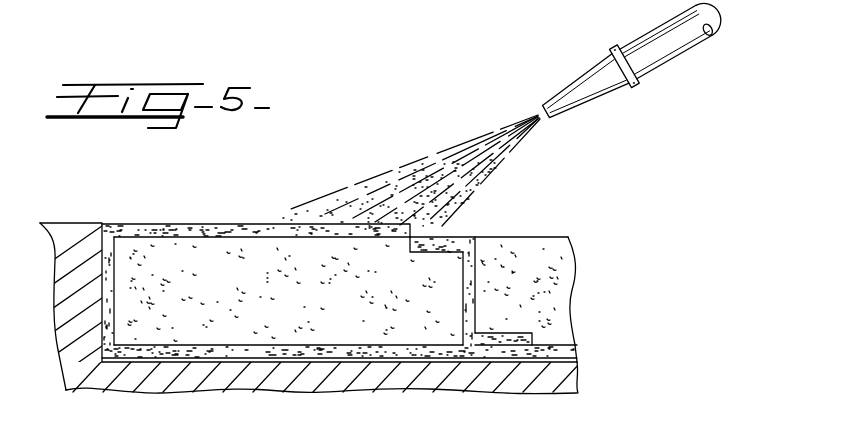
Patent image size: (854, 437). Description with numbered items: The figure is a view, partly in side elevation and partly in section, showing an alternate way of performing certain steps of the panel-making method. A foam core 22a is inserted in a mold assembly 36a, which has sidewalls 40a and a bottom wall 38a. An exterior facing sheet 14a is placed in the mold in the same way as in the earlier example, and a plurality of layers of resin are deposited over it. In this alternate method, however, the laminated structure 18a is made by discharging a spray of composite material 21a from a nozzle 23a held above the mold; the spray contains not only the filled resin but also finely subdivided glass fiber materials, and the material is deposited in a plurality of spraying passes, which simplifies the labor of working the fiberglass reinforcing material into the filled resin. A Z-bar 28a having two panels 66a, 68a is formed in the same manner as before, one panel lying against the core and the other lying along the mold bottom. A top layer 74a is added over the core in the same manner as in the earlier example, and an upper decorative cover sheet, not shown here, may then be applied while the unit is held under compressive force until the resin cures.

The exterior facing sheet 14a is at (577, 362).
The laminated structure 18a is at (573, 360).
The spray of composite material 21a is at (507, 152).
The foam core 22a is at (235, 250).
The nozzle 23a is at (599, 96).
The Z-bar 28a is at (472, 270).
The mold assembly 36a is at (74, 228).
The bottom wall 38a is at (278, 350).
The sidewalls 40a is at (107, 250).
The panel 66a is at (517, 330).
The panel 68a is at (443, 238).
The top layer 74a is at (182, 232).